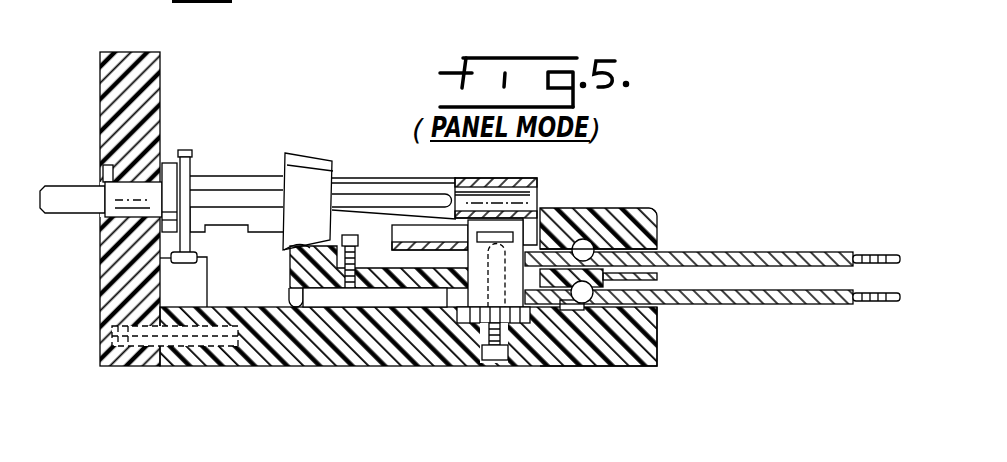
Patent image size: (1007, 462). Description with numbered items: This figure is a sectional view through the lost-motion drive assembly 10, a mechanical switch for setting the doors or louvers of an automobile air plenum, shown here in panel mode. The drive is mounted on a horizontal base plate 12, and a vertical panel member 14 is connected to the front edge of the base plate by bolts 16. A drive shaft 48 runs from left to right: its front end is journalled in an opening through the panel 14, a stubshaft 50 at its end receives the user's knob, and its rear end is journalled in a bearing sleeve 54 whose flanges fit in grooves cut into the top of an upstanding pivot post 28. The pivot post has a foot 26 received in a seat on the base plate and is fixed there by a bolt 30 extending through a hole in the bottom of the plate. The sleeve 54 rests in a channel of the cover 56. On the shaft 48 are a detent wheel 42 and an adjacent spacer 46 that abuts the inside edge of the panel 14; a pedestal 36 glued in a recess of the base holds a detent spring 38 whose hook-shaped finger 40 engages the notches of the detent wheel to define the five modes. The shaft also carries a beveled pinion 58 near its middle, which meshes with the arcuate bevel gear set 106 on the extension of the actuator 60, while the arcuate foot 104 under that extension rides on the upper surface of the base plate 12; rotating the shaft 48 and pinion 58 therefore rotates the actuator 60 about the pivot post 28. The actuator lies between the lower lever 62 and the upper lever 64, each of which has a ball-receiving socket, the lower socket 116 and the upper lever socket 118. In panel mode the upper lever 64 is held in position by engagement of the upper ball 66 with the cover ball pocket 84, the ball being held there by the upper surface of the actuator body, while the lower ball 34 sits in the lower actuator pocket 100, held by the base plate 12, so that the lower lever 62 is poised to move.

The lost-motion drive assembly 10 is at (593, 186).
The base plate 12 is at (231, 345).
The panel member 14 is at (161, 54).
The bolts 16 is at (110, 340).
The foot 26 is at (523, 350).
The pivot post 28 is at (476, 300).
The bolt 30 is at (492, 353).
The lower ball 34 is at (577, 309).
The pedestal 36 is at (207, 295).
The detent spring 38 is at (171, 259).
The hook-shaped finger 40 is at (171, 262).
The detent wheel 42 is at (195, 162).
The spacer 46 is at (168, 163).
The drive shaft 48 is at (221, 178).
The stubshaft 50 is at (80, 186).
The bearing sleeve 54 is at (520, 178).
The cover 56 is at (630, 233).
The beveled pinion 58 is at (328, 152).
The actuator 60 is at (290, 288).
The lower lever 62 is at (788, 304).
The upper lever 64 is at (820, 252).
The upper ball 66 is at (587, 239).
The cover ball pocket 84 is at (596, 284).
The lower actuator pocket 100 is at (657, 277).
The arcuate foot 104 is at (322, 320).
The arcuate bevel gear set 106 is at (297, 247).
The lower socket 116 is at (657, 336).
The upper lever socket 118 is at (657, 228).